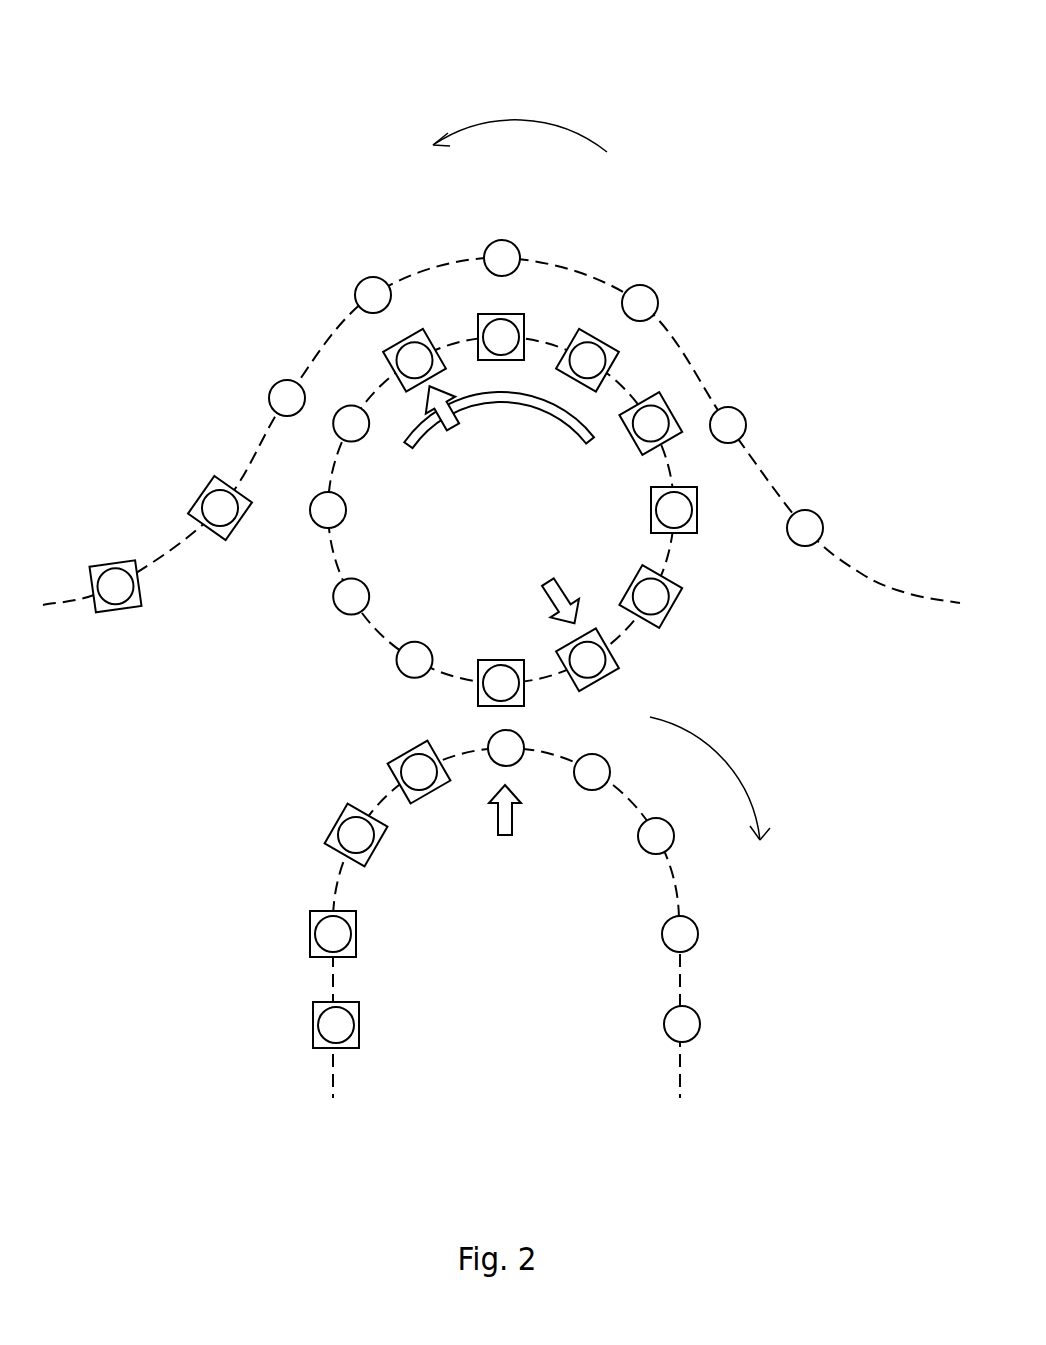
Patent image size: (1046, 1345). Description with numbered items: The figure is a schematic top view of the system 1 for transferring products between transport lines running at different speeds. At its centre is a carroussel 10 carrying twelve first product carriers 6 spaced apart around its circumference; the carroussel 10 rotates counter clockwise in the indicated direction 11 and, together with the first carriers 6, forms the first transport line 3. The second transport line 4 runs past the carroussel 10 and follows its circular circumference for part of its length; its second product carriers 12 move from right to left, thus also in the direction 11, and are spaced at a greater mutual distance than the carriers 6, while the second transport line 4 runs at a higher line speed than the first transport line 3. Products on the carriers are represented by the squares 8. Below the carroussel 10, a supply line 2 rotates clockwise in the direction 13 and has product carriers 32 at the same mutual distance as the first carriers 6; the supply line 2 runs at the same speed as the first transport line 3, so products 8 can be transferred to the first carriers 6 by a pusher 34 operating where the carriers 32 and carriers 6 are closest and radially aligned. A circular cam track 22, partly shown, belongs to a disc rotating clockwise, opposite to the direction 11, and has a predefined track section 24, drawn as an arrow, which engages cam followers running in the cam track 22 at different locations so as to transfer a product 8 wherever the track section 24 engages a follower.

The system 1 is at (274, 71).
The supply line 2 is at (245, 879).
The first transport line 3 is at (274, 622).
The second transport line 4 is at (785, 312).
The first product carriers 6 is at (652, 590).
The products 8 is at (196, 498).
The carroussel 10 is at (459, 598).
The direction of rotation 11 is at (525, 116).
The second product carriers 12 is at (507, 253).
The direction of supply line 13 is at (735, 768).
The cam track 22 is at (566, 421).
The track section 24 is at (443, 434).
The product carriers of supply line 32 is at (693, 935).
The pusher 34 is at (503, 830).